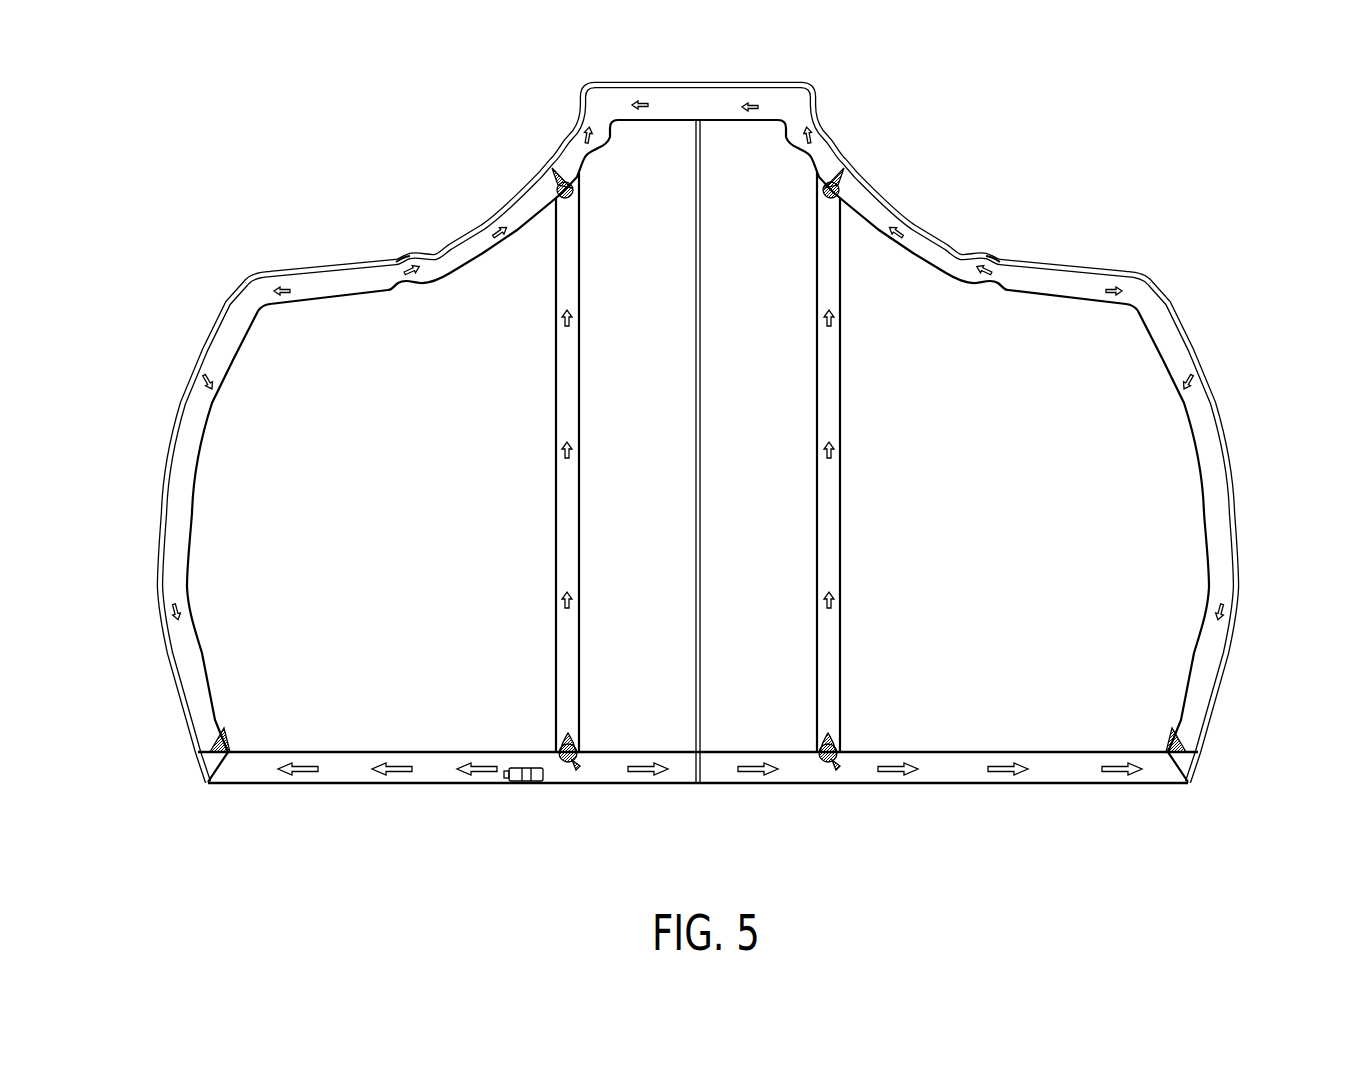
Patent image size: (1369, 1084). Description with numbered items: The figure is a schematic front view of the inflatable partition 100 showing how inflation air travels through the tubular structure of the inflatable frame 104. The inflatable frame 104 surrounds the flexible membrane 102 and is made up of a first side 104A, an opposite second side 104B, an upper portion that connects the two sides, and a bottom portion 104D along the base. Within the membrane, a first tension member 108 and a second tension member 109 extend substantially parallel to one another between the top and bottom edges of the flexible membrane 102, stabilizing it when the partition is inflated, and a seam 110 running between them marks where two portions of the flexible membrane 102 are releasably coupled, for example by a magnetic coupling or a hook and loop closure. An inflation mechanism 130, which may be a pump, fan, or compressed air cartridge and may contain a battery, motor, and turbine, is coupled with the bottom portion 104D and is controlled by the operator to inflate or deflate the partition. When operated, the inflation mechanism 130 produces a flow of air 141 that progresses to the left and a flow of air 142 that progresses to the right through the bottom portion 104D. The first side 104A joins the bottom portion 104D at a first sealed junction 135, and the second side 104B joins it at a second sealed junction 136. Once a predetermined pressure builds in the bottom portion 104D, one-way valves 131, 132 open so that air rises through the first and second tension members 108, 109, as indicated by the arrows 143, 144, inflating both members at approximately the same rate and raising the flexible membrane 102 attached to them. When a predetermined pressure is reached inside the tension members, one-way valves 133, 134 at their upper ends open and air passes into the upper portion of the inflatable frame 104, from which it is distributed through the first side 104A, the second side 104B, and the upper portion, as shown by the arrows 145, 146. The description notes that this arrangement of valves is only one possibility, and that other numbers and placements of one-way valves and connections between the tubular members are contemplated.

The inflatable partition 100 is at (701, 468).
The flexible membrane 102 is at (265, 410).
The inflatable frame 104 is at (1075, 300).
The first side 104A is at (160, 515).
The second side 104B is at (1233, 515).
The bottom portion 104D is at (698, 823).
The first tension member 108 is at (505, 462).
The second tension member 109 is at (882, 462).
The seam 110 is at (700, 480).
The inflation mechanism 130 is at (517, 777).
The one-way valve 131 is at (573, 762).
The one-way valve 132 is at (832, 762).
The one-way valve 133 is at (557, 173).
The one-way valve 134 is at (843, 170).
The first sealed junction 135 is at (222, 735).
The second sealed junction 136 is at (1174, 735).
The flow of air 141 is at (388, 770).
The flow of air 142 is at (758, 775).
The arrows 143 is at (555, 335).
The arrows 144 is at (840, 320).
The arrows 145 is at (410, 258).
The arrows 146 is at (880, 217).